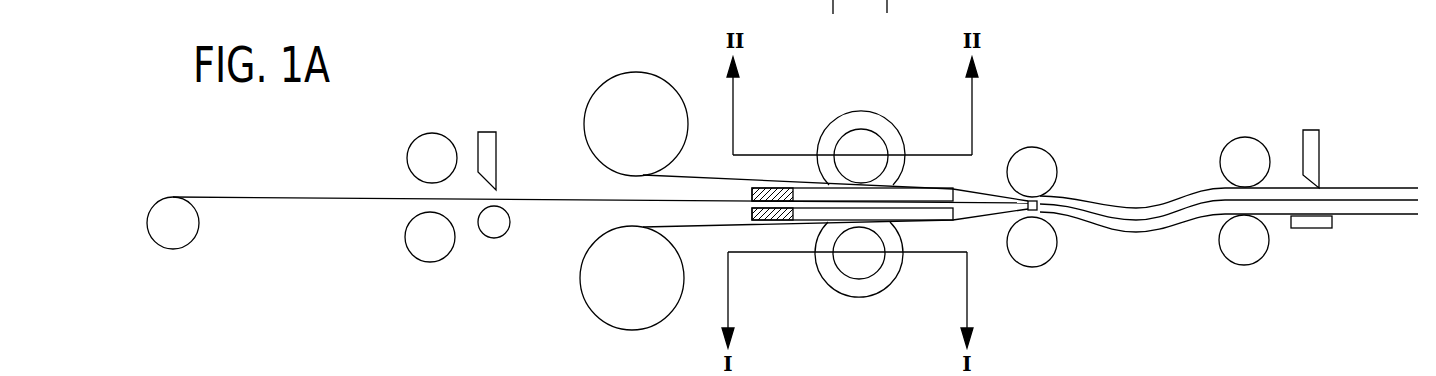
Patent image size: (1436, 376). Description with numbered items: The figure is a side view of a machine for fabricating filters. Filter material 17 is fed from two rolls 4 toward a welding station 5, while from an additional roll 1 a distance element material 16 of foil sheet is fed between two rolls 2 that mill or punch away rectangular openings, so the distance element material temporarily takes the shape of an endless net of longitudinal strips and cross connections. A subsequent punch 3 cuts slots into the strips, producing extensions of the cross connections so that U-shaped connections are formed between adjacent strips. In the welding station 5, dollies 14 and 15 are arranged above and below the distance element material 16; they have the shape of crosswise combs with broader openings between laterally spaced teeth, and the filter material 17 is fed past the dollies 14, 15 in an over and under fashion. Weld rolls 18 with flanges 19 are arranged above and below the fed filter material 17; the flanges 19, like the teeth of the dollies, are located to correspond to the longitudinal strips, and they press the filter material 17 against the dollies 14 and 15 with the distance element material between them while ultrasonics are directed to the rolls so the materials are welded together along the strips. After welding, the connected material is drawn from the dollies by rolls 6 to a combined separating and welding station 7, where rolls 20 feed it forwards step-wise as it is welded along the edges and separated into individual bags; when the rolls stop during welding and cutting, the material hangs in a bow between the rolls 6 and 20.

The roll 1 is at (173, 196).
The rolls 2 is at (432, 133).
The punch 3 is at (486, 132).
The rolls 4 is at (640, 72).
The welding station 5 is at (771, 155).
The rolls 6 is at (1036, 148).
The combined separating and welding station 7 is at (1314, 130).
The dolly 14 is at (903, 197).
The dolly 15 is at (808, 212).
The distance element material 16 is at (567, 200).
The filter material 17 is at (720, 193).
The weld rolls 18 is at (872, 138).
The flanges 19 is at (840, 128).
The rolls 20 is at (1243, 138).